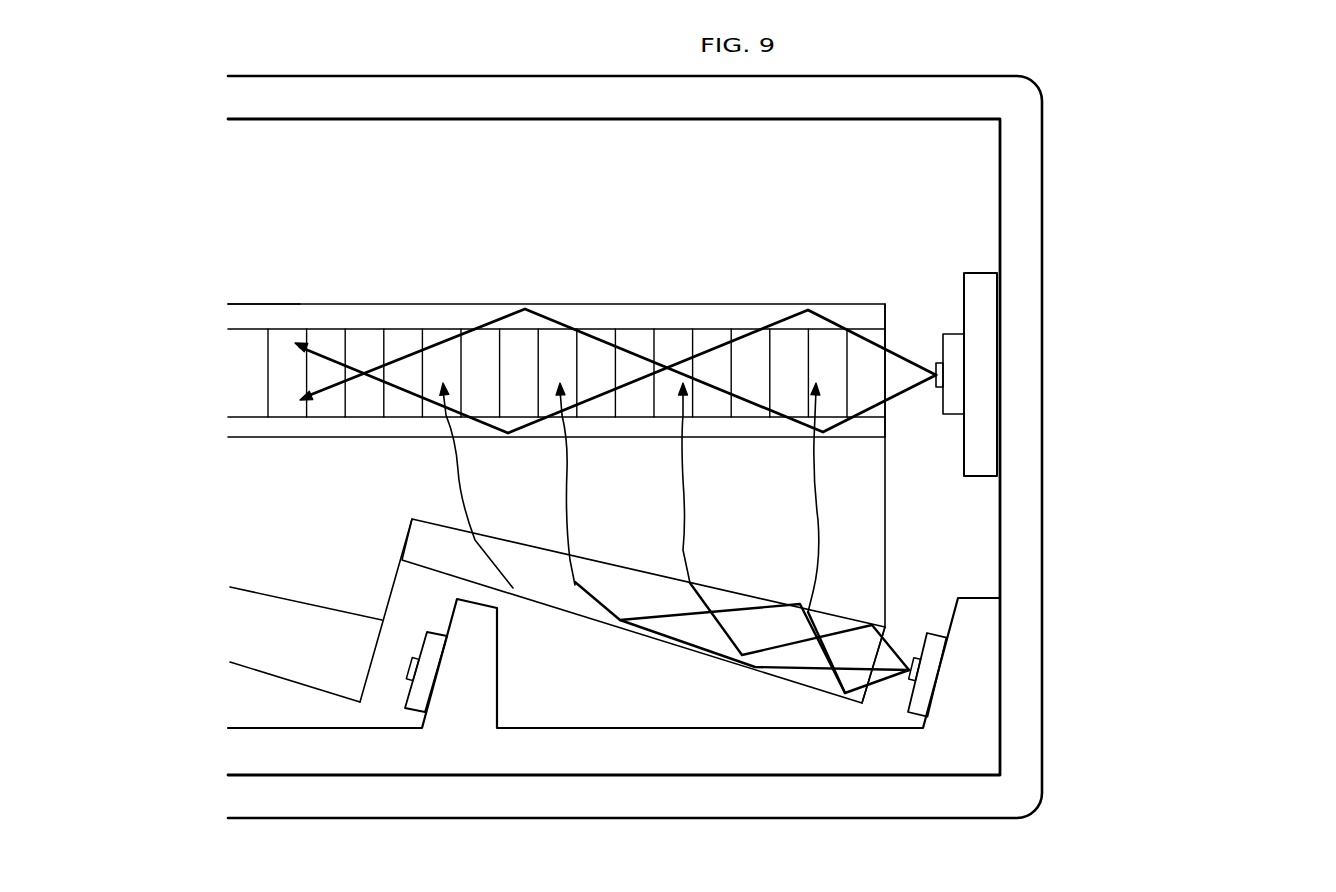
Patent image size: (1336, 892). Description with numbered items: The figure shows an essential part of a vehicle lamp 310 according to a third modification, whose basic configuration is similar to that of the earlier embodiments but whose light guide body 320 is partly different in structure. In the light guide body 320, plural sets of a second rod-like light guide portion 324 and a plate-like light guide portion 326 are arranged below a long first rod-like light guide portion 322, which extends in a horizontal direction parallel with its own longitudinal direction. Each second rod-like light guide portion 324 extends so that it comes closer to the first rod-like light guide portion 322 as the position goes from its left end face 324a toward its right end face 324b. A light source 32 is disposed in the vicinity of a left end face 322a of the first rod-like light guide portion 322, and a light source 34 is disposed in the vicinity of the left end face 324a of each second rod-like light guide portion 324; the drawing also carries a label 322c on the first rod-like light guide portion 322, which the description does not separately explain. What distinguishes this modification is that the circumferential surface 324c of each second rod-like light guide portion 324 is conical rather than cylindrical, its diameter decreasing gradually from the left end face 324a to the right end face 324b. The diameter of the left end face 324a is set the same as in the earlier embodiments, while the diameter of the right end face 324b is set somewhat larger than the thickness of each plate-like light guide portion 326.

The vehicle lamp 310 is at (1143, 120).
The light guide body 320 is at (395, 298).
The first rod-like light guide portion 322 is at (712, 317).
The left end face of the first rod-like light guide portion 322a is at (885, 388).
The end surface of first light guide 322c is at (280, 313).
The light source 32 is at (928, 342).
The plate-like light guide portion 326 is at (757, 497).
The second rod-like light guide portion 324 is at (676, 627).
The left end face of the second rod-like light guide portion 324a is at (876, 660).
The right end face of the second rod-like light guide portion 324b is at (405, 538).
The circumferential surface of the second rod-like light guide portion 324c is at (289, 647).
The light source 34 is at (907, 642).